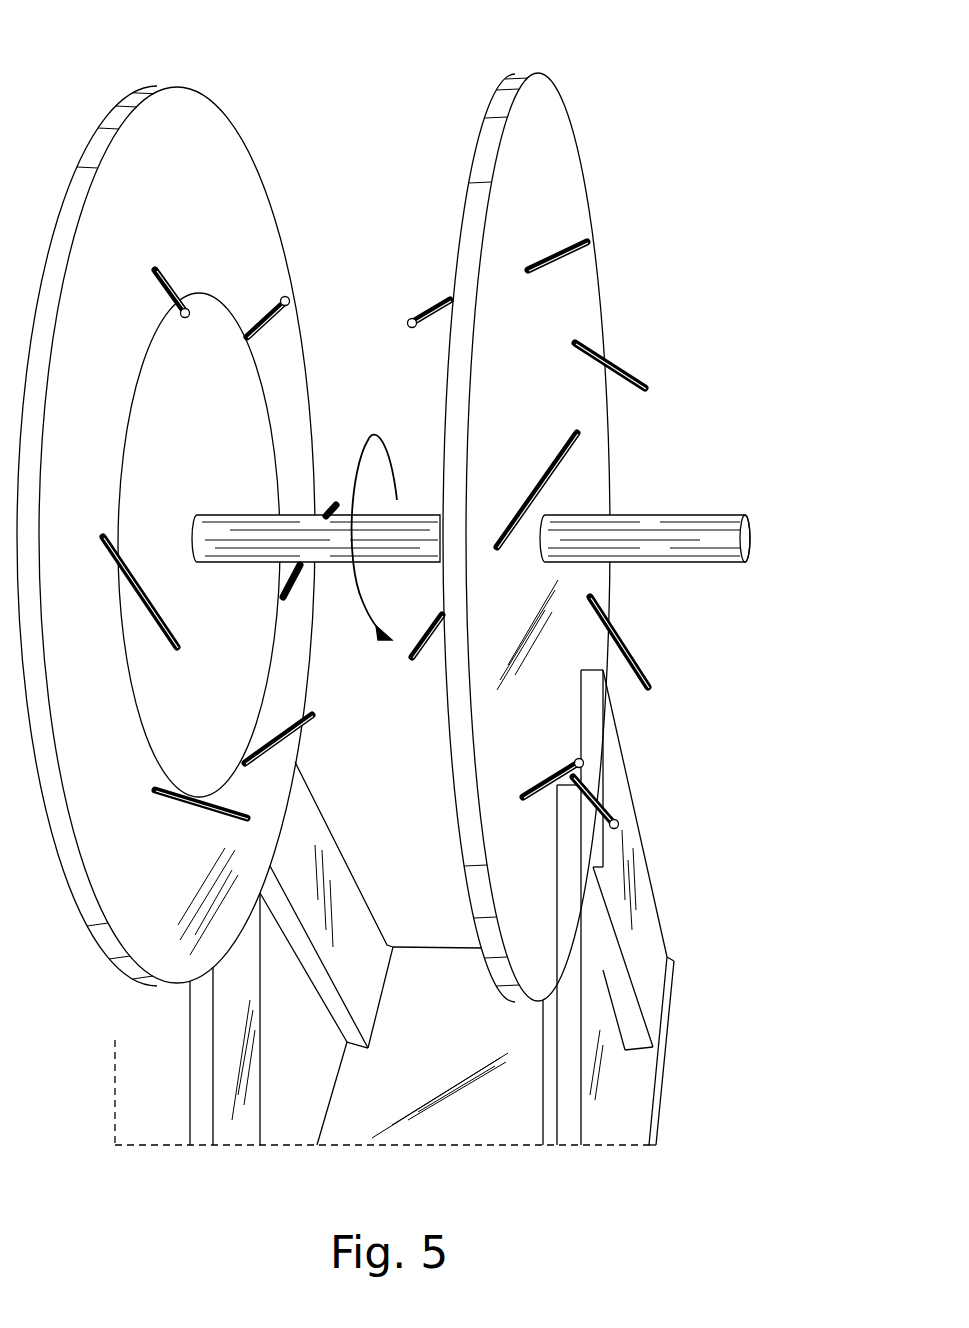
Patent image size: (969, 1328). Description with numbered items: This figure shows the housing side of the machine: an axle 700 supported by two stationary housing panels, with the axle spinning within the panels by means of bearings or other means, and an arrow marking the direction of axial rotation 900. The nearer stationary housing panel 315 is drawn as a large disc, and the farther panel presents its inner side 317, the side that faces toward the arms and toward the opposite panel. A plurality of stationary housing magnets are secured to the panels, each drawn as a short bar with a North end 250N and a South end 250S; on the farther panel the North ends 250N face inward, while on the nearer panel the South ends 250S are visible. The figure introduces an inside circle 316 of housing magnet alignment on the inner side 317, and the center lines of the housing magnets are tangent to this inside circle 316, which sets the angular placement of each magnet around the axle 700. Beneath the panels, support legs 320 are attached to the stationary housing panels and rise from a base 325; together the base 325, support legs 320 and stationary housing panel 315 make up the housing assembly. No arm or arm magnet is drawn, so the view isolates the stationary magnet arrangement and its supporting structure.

The stationary housing panel 315 is at (545, 72).
The inner side of stationary housing panel 317 is at (185, 166).
The inside circle of housing magnet alignment 316 is at (197, 293).
The North end of stationary housing magnet 250N is at (407, 322).
The South end of stationary housing magnet 250S is at (593, 243).
The axle 700 is at (747, 515).
The direction of axial rotation 900 is at (383, 440).
The support leg of housing assembly 320 is at (313, 793).
The base of housing assembly 325 is at (407, 1107).